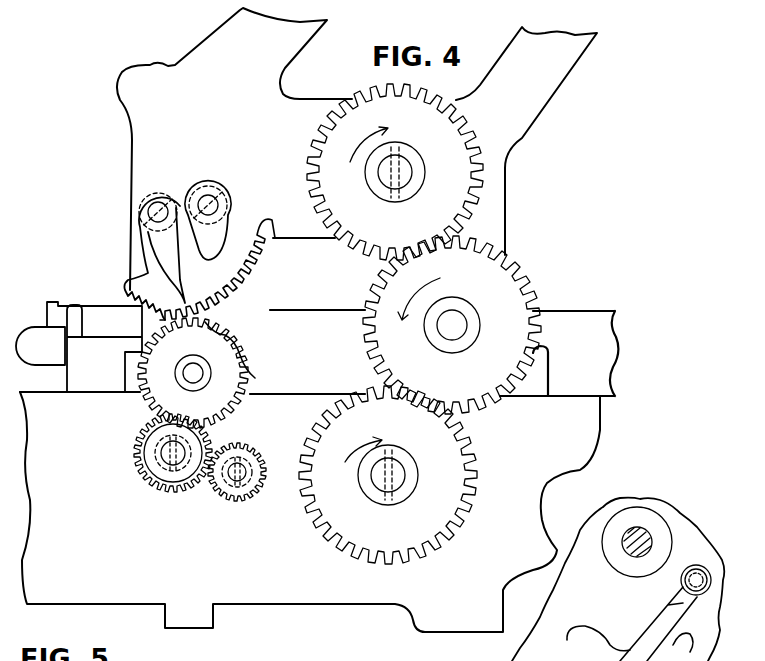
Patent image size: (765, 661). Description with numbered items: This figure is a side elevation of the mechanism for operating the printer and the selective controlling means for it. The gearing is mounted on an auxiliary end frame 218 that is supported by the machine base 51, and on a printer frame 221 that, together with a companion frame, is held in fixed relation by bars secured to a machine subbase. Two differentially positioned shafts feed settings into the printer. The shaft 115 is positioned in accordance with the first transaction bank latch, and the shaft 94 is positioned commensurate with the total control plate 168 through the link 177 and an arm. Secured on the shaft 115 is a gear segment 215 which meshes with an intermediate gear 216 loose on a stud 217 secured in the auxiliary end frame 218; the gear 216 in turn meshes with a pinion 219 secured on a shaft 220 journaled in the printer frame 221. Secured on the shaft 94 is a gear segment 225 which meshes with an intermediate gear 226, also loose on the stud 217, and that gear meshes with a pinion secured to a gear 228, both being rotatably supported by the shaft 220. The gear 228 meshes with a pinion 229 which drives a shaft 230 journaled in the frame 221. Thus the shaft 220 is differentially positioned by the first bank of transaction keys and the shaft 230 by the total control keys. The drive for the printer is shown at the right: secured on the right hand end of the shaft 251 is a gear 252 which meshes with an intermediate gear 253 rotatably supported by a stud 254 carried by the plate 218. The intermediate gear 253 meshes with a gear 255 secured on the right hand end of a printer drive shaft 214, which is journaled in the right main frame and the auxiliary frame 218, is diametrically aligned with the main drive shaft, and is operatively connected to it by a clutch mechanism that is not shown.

The auxiliary end frame 218 is at (273, 80).
The machine base 51 is at (568, 317).
The printer frame 221 is at (256, 600).
The gear 255 is at (458, 113).
The printer drive shaft 214 is at (408, 190).
The intermediate gear 253 is at (372, 357).
The stud 254 is at (454, 312).
The gear 252 is at (325, 412).
The shaft 251 is at (405, 468).
The intermediate gear 216 is at (148, 400).
The stud 217 is at (200, 345).
The gear segment 215 is at (170, 248).
The shaft 115 is at (165, 180).
The shaft 94 is at (209, 195).
The gear segment 225 is at (238, 226).
The intermediate gear 226 is at (248, 346).
The pinion 219 is at (136, 460).
The gear 228 is at (155, 478).
The shaft 220 is at (167, 446).
The pinion 229 is at (222, 496).
The shaft 230 is at (242, 468).
The total control plate 168 is at (703, 551).
The link 177 is at (683, 607).